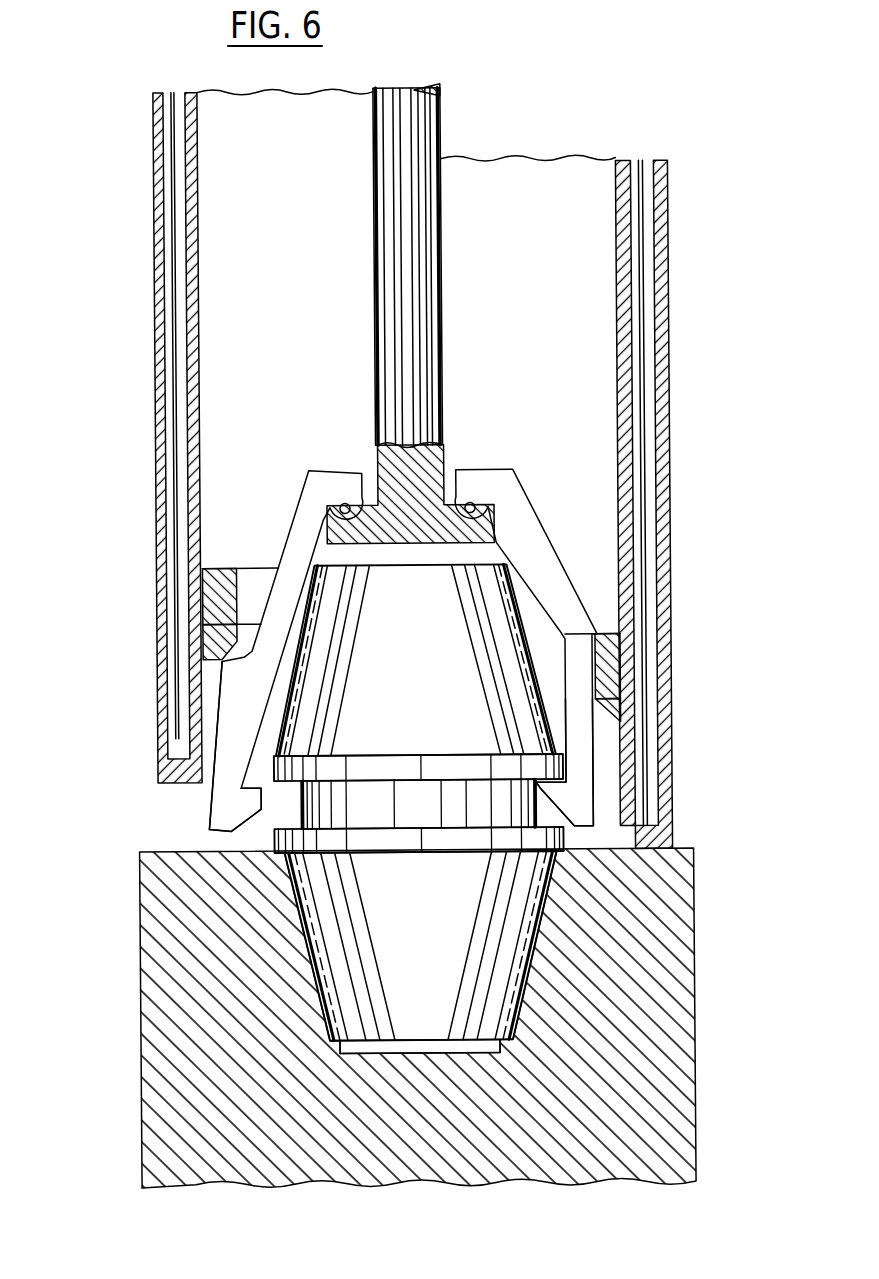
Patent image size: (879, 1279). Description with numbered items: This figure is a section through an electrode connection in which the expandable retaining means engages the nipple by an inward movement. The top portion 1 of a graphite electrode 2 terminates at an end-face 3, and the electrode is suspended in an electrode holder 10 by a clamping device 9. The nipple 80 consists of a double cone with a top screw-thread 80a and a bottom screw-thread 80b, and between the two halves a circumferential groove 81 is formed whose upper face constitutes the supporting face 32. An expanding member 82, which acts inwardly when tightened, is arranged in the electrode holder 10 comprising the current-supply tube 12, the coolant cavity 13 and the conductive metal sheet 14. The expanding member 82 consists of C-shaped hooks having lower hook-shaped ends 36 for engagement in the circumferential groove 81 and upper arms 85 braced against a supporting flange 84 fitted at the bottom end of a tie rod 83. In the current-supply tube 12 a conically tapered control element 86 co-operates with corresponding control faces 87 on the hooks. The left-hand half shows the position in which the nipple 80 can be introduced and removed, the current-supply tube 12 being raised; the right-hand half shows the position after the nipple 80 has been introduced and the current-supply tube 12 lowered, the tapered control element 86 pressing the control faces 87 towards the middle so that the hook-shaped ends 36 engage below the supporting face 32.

The top portion 1 is at (678, 935).
The graphite electrode 2 is at (716, 1045).
The end-face 3 is at (152, 846).
The clamping device 9 is at (607, 748).
The electrode holder 10 is at (687, 503).
The current-supply tube 12 is at (662, 220).
The coolant cavity 13 is at (640, 262).
The conductive metal sheet 14 is at (645, 292).
The supporting face 32 is at (284, 790).
The lower hook-shaped ends 36 is at (227, 805).
The nipple 80 is at (418, 659).
The top screw-thread 80a is at (520, 637).
The bottom screw-thread 80b is at (540, 921).
The circumferential groove 81 is at (393, 808).
The expanding member 82 is at (527, 553).
The tie rod 83 is at (426, 128).
The supporting flange 84 is at (490, 524).
The upper arms 85 is at (480, 487).
The conically tapered control element 86 is at (608, 675).
The control faces 87 is at (215, 628).